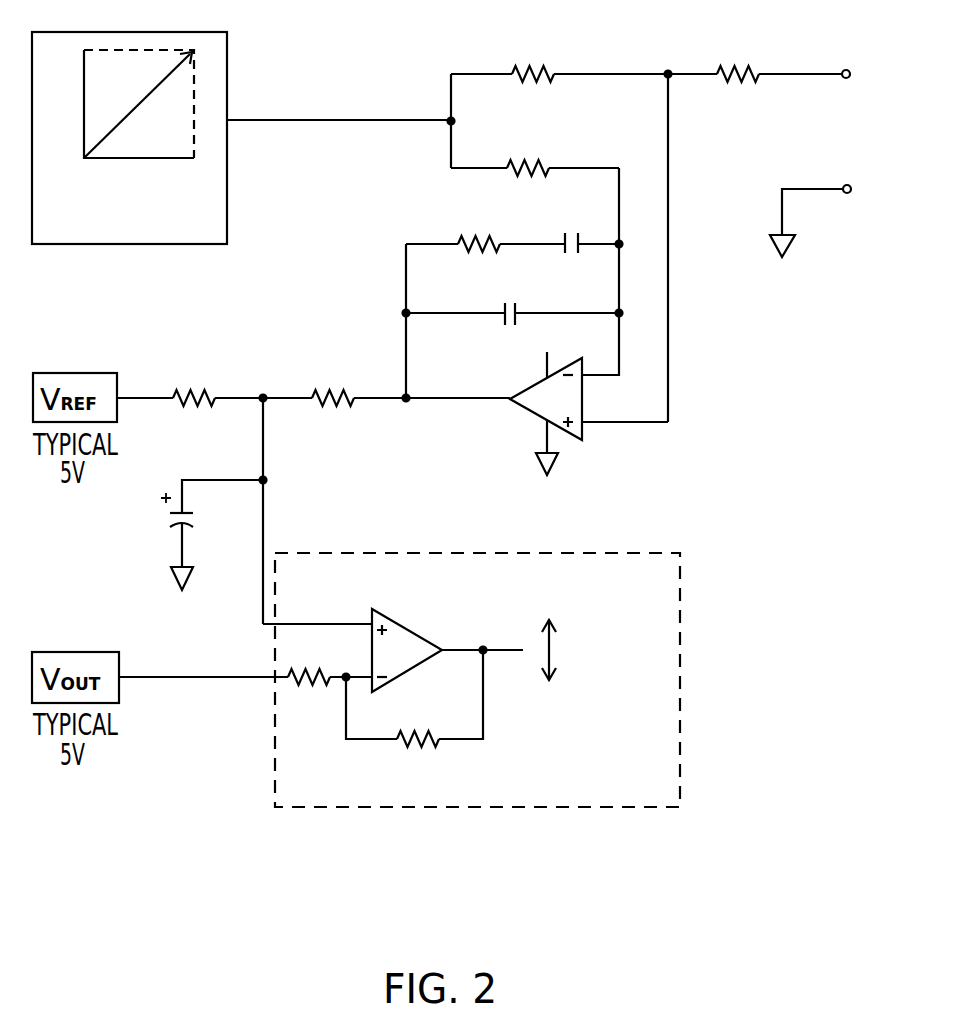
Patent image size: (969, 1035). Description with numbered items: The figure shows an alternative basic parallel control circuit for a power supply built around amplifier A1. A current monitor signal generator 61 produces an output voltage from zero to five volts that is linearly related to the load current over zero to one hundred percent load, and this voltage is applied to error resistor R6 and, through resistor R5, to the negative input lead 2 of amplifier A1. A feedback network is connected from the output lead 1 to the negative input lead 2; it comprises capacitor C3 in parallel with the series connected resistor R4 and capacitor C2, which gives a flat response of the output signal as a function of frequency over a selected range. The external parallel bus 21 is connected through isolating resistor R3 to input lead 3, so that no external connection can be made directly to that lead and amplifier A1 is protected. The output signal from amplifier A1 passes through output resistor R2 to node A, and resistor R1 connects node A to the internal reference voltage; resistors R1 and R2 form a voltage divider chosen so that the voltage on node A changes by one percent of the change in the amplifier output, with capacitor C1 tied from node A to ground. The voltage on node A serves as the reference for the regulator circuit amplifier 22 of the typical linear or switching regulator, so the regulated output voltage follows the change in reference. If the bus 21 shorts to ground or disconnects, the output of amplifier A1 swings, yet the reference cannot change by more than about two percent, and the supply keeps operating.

The current monitor signal generator 61 is at (148, 32).
The external parallel bus 21 is at (845, 69).
The regulator circuit amplifier 22 is at (404, 650).
The amplifier A1 is at (555, 412).
The output lead 1 is at (500, 378).
The negative input lead 2 is at (616, 374).
The input lead 3 is at (616, 421).
The node A is at (281, 396).
The resistor R1 is at (190, 400).
The output resistor R2 is at (334, 402).
The isolating resistor R3 is at (755, 76).
The resistor R4 is at (485, 247).
The resistor R5 is at (535, 168).
The error resistor R6 is at (559, 76).
The capacitor C1 is at (176, 524).
The capacitor C2 is at (564, 254).
The capacitor C3 is at (504, 303).